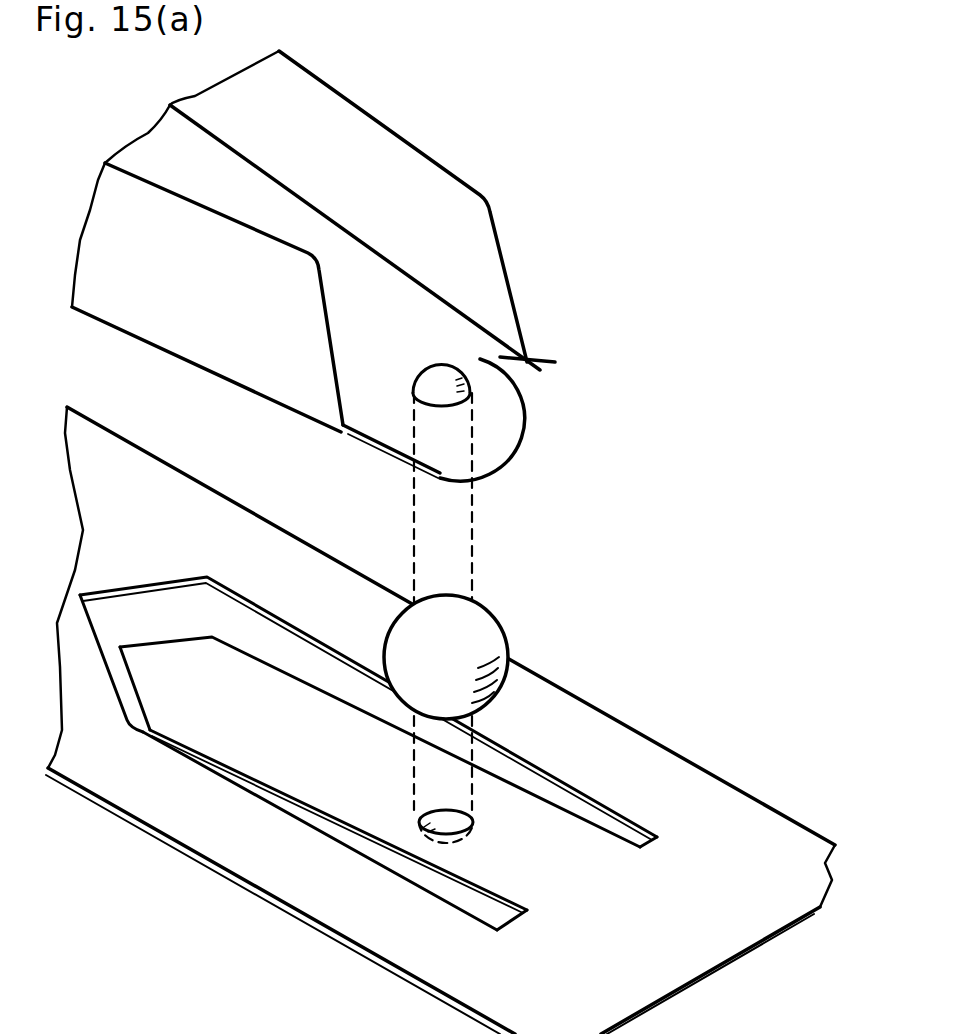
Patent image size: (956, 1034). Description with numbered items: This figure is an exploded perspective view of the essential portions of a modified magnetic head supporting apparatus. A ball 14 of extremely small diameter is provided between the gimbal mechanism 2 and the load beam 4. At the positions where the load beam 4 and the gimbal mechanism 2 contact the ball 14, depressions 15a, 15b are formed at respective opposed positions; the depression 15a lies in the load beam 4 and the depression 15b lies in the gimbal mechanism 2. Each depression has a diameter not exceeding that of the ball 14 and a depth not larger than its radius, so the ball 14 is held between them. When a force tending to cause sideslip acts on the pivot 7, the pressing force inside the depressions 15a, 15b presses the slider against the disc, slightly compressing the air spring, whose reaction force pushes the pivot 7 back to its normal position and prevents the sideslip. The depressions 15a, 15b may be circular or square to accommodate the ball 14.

The gimbal mechanism 2 is at (718, 793).
The load beam 4 is at (487, 232).
The pivot 7 is at (477, 825).
The ball 14 is at (495, 632).
The depression 15a is at (463, 380).
The depression 15b is at (457, 803).